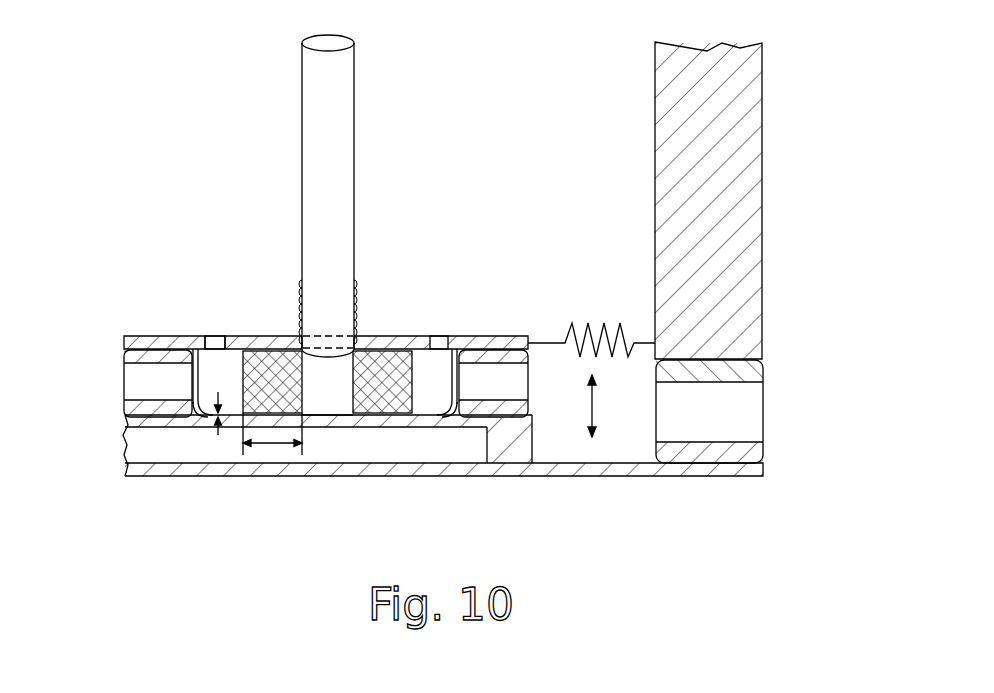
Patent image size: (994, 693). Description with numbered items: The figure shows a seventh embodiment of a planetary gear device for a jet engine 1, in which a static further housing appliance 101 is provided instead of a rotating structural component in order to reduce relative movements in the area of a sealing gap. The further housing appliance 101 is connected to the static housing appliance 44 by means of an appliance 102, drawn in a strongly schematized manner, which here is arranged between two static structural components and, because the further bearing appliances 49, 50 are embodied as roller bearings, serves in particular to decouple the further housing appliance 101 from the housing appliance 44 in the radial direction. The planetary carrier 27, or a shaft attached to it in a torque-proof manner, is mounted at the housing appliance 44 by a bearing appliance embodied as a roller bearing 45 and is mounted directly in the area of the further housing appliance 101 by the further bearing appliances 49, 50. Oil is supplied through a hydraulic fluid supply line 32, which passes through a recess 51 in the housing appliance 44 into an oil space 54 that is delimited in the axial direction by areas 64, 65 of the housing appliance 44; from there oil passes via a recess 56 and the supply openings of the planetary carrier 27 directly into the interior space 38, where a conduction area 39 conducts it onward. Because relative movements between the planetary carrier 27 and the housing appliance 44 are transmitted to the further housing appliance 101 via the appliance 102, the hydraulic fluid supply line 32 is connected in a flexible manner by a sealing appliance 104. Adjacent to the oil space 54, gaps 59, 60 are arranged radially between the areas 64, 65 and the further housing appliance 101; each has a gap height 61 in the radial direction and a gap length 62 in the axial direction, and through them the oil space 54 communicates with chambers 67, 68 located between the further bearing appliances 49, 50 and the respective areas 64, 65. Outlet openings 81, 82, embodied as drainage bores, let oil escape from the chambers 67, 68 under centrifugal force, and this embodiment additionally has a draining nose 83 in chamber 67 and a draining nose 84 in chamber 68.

The jet engine 1 is at (115, 99).
The hydraulic fluid supply line 32 is at (341, 122).
The sealing appliance 104 is at (297, 317).
The area of the housing appliance 65 is at (365, 355).
The recess 51 is at (335, 338).
The further bearing appliance 49 is at (124, 354).
The area of the housing appliance 64 is at (243, 352).
The outlet opening 81 is at (208, 337).
The oil space 54 is at (300, 335).
The outlet opening 82 is at (437, 343).
The further housing appliance 101 is at (135, 355).
The chamber 67 is at (195, 347).
The draining nose 83 is at (210, 405).
The gap 59 is at (272, 350).
The recess 56 is at (398, 400).
The chamber 68 is at (457, 350).
The draining nose 84 is at (460, 405).
The further bearing appliance 50 is at (500, 352).
The gap height 61 is at (212, 418).
The gap 60 is at (333, 415).
The planetary carrier 27 is at (508, 457).
The interior space 38 is at (237, 455).
The conduction area 39 is at (140, 460).
The gap length 62 is at (270, 450).
The appliance 102 is at (600, 327).
The housing appliance 44 is at (740, 132).
The roller bearing 45 is at (750, 370).